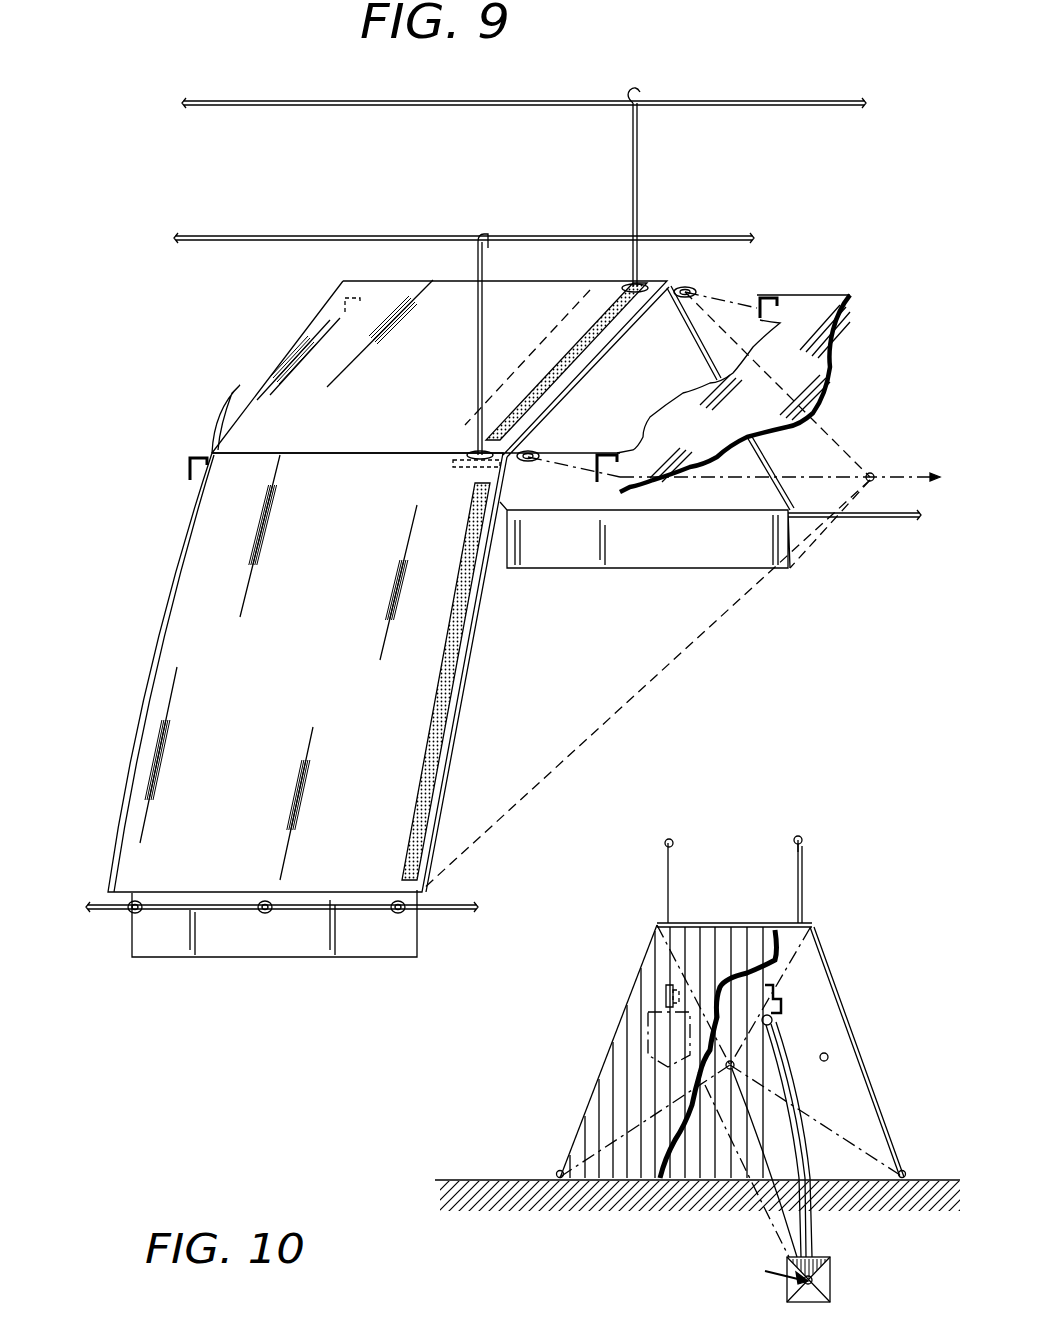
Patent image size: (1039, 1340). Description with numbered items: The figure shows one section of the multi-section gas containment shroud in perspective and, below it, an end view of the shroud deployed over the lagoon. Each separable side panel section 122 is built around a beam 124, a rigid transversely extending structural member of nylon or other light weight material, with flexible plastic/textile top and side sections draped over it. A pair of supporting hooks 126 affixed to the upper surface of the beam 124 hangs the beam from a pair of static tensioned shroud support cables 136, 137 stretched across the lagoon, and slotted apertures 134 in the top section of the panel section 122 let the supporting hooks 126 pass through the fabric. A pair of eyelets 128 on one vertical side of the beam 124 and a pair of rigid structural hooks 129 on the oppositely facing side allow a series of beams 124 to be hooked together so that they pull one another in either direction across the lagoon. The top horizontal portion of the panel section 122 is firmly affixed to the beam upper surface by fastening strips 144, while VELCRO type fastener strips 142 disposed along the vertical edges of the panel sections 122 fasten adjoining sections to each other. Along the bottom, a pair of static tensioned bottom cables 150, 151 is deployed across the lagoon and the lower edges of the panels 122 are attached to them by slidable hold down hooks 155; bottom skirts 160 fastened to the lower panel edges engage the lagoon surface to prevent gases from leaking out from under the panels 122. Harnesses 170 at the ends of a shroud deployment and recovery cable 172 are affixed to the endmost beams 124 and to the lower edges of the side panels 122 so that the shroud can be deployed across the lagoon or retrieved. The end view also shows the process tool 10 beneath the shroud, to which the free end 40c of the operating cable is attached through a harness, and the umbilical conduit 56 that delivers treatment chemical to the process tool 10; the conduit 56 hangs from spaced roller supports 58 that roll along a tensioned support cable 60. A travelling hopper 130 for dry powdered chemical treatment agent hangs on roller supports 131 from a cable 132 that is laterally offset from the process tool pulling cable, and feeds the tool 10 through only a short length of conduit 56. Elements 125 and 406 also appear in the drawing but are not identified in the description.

In FIG. 10, the process tool 10 is at (832, 1278).
In FIG. 10, the free end of operating cable 40c is at (765, 1271).
In FIG. 10, the umbilical conduit 56 is at (792, 1095).
In FIG. 10, the roller supports 58 is at (775, 1010).
In FIG. 10, the tensioned support cable 60 is at (780, 1000).
In FIG. 9, the side panel section 122 is at (307, 638).
In FIG. 9, the beam 124 is at (590, 383).
In FIG. 9, the upright post 125 is at (630, 100).
In FIG. 9, the supporting hooks 126 is at (500, 196).
In FIG. 10, the supporting hooks 126 is at (802, 880).
In FIG. 9, the eyelets 128 is at (692, 287).
In FIG. 9, the rigid structural hooks 129 is at (770, 297).
In FIG. 10, the travelling hopper 130 is at (650, 1025).
In FIG. 10, the roller supports 131 is at (665, 988).
In FIG. 10, the cable 132 is at (665, 1000).
In FIG. 9, the slotted apertures 134 is at (625, 283).
In FIG. 9, the shroud support cable 136 is at (503, 101).
In FIG. 10, the shroud support cable 136 is at (803, 842).
In FIG. 9, the shroud support cable 137 is at (343, 236).
In FIG. 10, the shroud support cable 137 is at (672, 845).
In FIG. 9, the fastener strips 142 is at (440, 747).
In FIG. 9, the fastening strips 144 is at (578, 340).
In FIG. 9, the bottom cable 150 is at (455, 905).
In FIG. 10, the bottom cable 150 is at (560, 1172).
In FIG. 9, the bottom cable 151 is at (876, 517).
In FIG. 10, the bottom cable 151 is at (902, 1172).
In FIG. 9, the slidable hold down hooks 155 is at (272, 903).
In FIG. 9, the bottom skirts 160 is at (274, 923).
In FIG. 10, the bottom skirts 160 is at (557, 1178).
In FIG. 9, the harnesses 170 is at (652, 683).
In FIG. 9, the shroud deployment and recovery cable 172 is at (878, 478).
In FIG. 10, the shroud deployment and recovery cable 172 is at (730, 1051).
In FIG. 10, the pivot 406 is at (829, 1057).